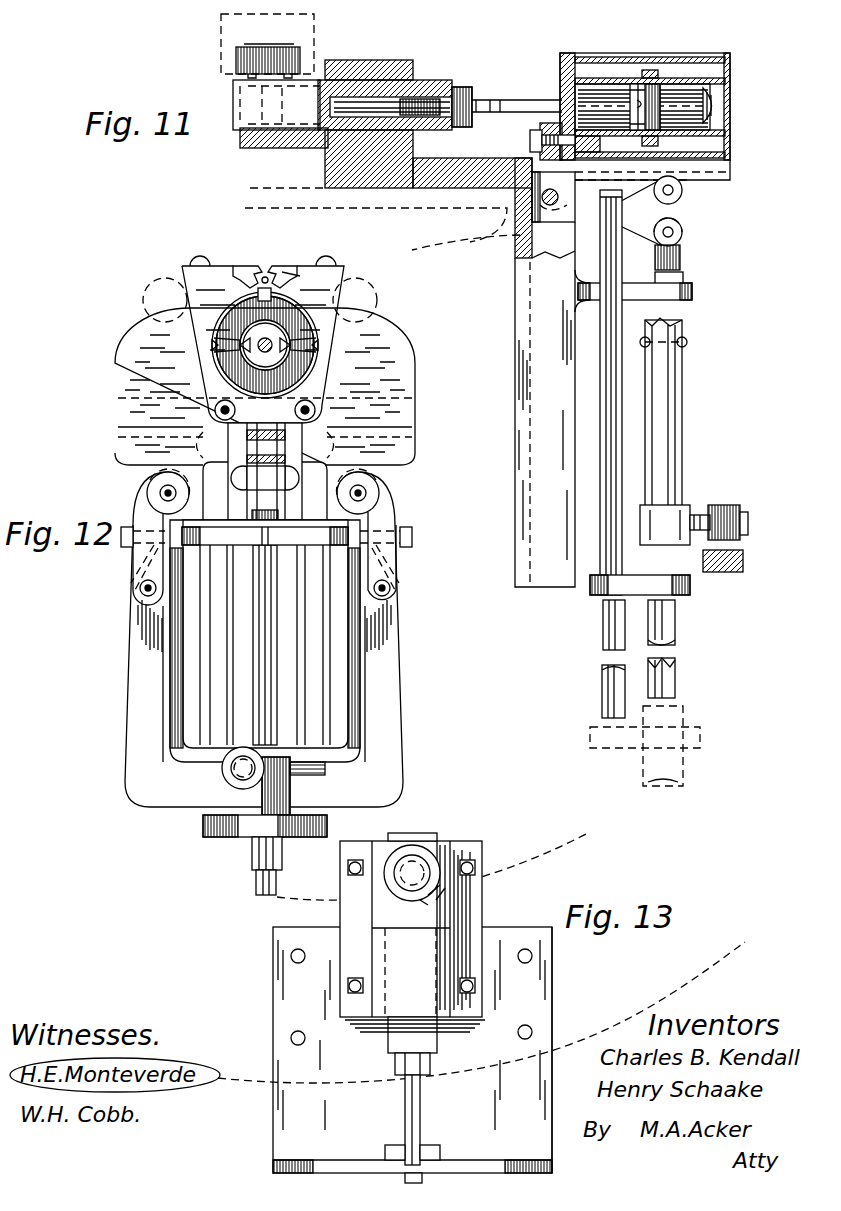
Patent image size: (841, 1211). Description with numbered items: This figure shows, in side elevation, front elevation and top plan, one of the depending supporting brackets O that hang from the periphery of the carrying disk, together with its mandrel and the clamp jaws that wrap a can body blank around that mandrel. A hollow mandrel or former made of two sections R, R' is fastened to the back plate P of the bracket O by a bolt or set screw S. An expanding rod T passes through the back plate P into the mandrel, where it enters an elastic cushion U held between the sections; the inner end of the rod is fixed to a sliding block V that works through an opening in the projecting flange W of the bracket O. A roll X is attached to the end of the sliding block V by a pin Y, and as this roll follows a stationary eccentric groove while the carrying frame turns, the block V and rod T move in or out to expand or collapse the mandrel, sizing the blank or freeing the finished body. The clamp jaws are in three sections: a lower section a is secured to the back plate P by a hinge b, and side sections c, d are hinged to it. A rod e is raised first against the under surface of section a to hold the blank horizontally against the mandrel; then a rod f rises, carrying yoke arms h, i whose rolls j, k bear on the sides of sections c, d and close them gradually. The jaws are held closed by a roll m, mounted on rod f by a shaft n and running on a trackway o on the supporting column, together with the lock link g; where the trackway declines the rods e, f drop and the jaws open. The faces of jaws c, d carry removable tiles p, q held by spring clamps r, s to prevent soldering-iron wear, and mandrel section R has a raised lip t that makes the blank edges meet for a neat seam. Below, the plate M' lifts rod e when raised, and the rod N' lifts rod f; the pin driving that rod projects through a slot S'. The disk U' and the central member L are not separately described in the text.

In FIG. 11, the pin Y is at (268, 48).
In FIG. 13, the pin Y is at (414, 862).
In FIG. 11, the roll X is at (232, 58).
In FIG. 13, the roll X is at (432, 847).
In FIG. 11, the projecting flange W is at (352, 62).
In FIG. 13, the projecting flange W is at (411, 972).
In FIG. 11, the sliding block V is at (425, 80).
In FIG. 13, the sliding block V is at (425, 1040).
In FIG. 11, the expanding rod T is at (505, 95).
In FIG. 13, the expanding rod T is at (413, 1115).
In FIG. 11, the elastic cushion U is at (642, 79).
In FIG. 11, the cylinder disk U' is at (737, 105).
In FIG. 11, the mandrel section R is at (662, 106).
In FIG. 12, the mandrel section R is at (311, 342).
In FIG. 11, the mandrel section R' is at (674, 143).
In FIG. 12, the mandrel section R' is at (206, 339).
In FIG. 11, the bolt or set screw S is at (645, 244).
In FIG. 11, the slot S' is at (536, 141).
In FIG. 11, the lower clamp jaw section a is at (716, 168).
In FIG. 12, the lower clamp jaw section a is at (265, 408).
In FIG. 11, the hinge b is at (560, 215).
In FIG. 11, the supporting bracket O is at (437, 185).
In FIG. 13, the supporting bracket O is at (538, 1003).
In FIG. 11, the yoke arm h is at (660, 432).
In FIG. 12, the yoke arm h is at (195, 639).
In FIG. 12, the yoke arm i is at (334, 639).
In FIG. 11, the roll m is at (716, 505).
In FIG. 12, the roll m is at (226, 778).
In FIG. 11, the shaft n is at (748, 522).
In FIG. 12, the shaft n is at (238, 778).
In FIG. 11, the trackway o is at (743, 560).
In FIG. 11, the rod e is at (603, 622).
In FIG. 12, the rod e is at (276, 882).
In FIG. 11, the rod f is at (678, 622).
In FIG. 12, the rod f is at (262, 850).
In FIG. 11, the plate M' is at (670, 731).
In FIG. 11, the rod N' is at (640, 746).
In FIG. 12, the spring clamp r is at (205, 266).
In FIG. 12, the tile p is at (258, 282).
In FIG. 12, the tile q is at (268, 280).
In FIG. 12, the spring clamp s is at (286, 275).
In FIG. 12, the raised lip t is at (275, 292).
In FIG. 12, the side clamp jaw section d is at (330, 352).
In FIG. 12, the side clamp jaw section c is at (207, 369).
In FIG. 12, the back plate P is at (412, 370).
In FIG. 13, the back plate P is at (490, 1167).
In FIG. 12, the roll j is at (150, 480).
In FIG. 12, the roll k is at (376, 480).
In FIG. 12, the lock link g is at (282, 472).
In FIG. 12, the rod L is at (270, 640).